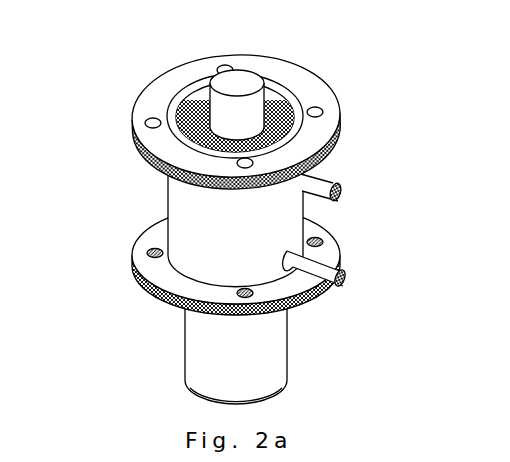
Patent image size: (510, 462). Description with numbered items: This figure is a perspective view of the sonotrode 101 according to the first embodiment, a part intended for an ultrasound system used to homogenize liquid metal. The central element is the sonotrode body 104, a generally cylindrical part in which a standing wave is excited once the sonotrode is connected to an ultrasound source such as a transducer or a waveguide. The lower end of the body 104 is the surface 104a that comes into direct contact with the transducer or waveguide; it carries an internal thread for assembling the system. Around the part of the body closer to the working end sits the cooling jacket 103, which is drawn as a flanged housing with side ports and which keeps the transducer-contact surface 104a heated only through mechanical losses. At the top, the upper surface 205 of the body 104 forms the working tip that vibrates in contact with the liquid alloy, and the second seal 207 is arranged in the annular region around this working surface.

The sonotrode 101 is at (205, 221).
The cooling jacket 103 is at (245, 238).
The sonotrode body 104 is at (243, 356).
The surface in direct contact with a transducer or a waveguide 104a is at (247, 403).
The upper surface of the body 205 is at (238, 84).
The second seal 207 is at (288, 131).